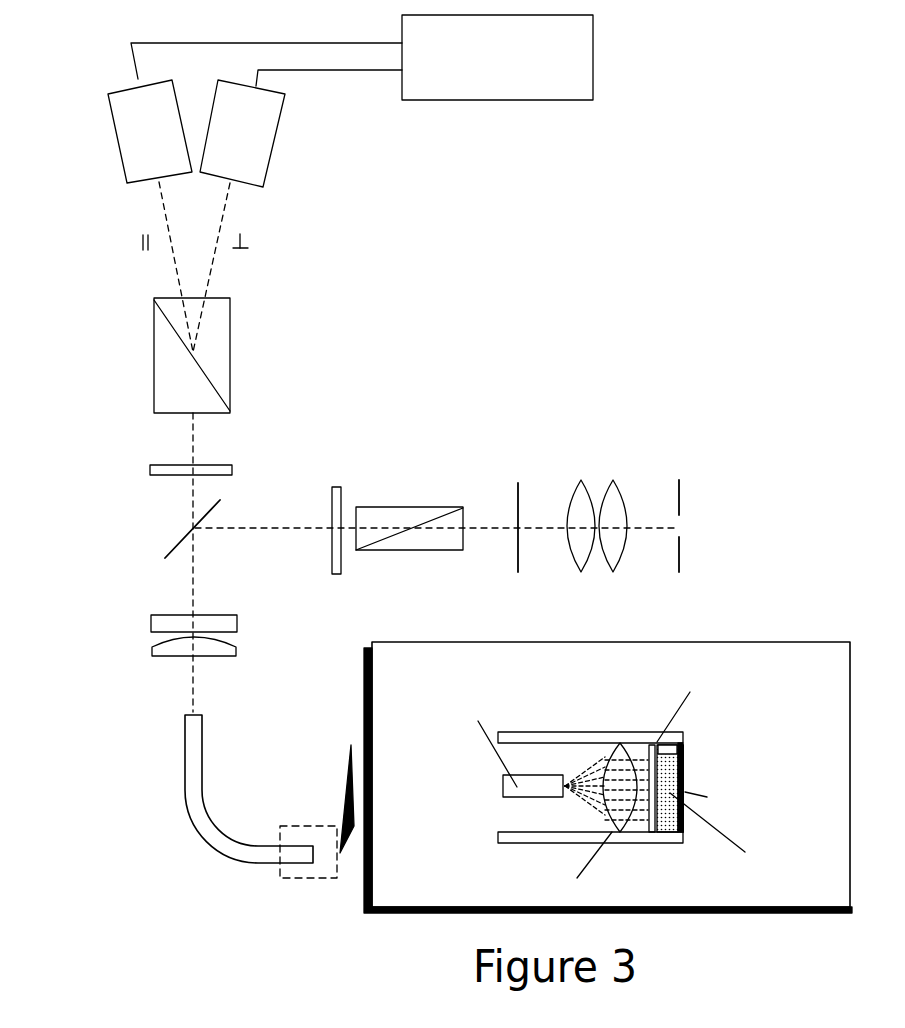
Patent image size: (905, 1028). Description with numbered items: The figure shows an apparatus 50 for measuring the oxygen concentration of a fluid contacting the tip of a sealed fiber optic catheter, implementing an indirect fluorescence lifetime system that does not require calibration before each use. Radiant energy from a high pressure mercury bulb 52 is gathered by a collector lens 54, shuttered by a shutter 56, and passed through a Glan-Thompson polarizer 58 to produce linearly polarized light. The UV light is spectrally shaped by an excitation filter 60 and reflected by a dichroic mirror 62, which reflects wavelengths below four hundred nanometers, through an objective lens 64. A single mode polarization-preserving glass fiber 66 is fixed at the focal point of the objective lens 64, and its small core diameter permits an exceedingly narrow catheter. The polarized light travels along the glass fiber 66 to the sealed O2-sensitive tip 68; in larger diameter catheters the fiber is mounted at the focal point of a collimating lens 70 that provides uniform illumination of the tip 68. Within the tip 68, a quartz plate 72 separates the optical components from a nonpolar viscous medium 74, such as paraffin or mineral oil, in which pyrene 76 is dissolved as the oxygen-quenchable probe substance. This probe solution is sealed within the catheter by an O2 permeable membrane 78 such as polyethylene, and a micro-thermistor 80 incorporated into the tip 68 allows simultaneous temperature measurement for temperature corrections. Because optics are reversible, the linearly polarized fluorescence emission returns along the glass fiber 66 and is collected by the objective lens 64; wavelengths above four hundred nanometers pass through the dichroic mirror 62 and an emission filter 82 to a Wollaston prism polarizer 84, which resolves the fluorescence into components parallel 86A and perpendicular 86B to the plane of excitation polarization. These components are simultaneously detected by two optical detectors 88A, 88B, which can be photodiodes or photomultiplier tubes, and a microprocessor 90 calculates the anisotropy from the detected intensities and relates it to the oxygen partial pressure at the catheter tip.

The apparatus 50 is at (536, 286).
The high pressure mercury bulb 52 is at (681, 492).
The collector lens 54 is at (595, 478).
The shutter 56 is at (523, 557).
The Glan-Thompson polarizer 58 is at (395, 512).
The excitation filter 60 is at (328, 557).
The dichroic mirror 62 is at (176, 542).
The objective lens 64 is at (150, 639).
The single mode polarization-preserving glass fiber 66 is at (198, 800).
The O2-sensitive tip 68 is at (693, 730).
The collimating lens 70 is at (632, 822).
The quartz plate 72 is at (650, 740).
The nonpolar viscous medium 74 is at (663, 820).
The pyrene 76 is at (684, 840).
The O2 permeable membrane 78 is at (685, 785).
The micro-thermistor 80 is at (683, 749).
The emission filter 82 is at (157, 462).
The Wollaston prism polarizer 84 is at (218, 349).
The parallel polarized component 86A is at (176, 277).
The perpendicular polarized component 86B is at (217, 277).
The optical detector 88A is at (181, 150).
The optical detector 88B is at (215, 150).
The microprocessor 90 is at (511, 92).